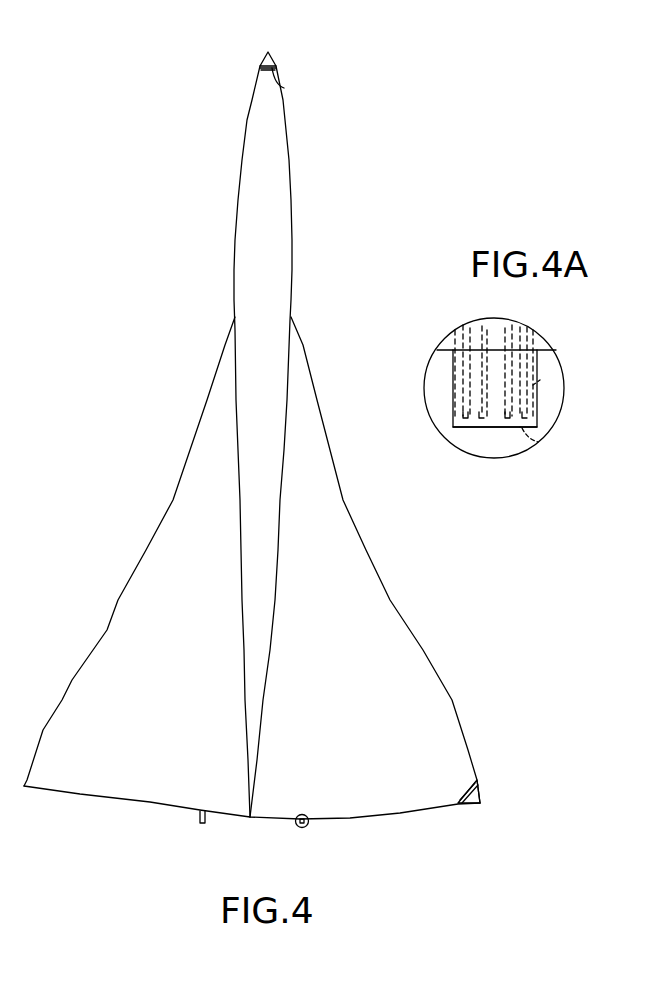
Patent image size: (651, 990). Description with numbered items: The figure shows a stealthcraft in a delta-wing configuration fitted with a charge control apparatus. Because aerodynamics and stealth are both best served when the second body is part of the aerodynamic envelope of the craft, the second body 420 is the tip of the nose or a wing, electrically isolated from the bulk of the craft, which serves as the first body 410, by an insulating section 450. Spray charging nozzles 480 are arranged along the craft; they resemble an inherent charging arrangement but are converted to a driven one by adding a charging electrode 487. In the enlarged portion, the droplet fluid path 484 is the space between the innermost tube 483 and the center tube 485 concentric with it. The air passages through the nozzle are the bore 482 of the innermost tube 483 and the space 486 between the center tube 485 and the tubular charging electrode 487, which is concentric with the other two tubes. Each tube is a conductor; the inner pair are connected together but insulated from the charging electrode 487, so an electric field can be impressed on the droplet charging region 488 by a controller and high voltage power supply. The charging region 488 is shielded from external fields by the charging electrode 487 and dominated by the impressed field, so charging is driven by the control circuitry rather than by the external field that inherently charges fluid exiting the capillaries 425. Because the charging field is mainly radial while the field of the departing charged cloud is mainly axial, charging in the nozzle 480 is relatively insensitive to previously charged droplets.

In FIG. 4, the first body 410 is at (292, 226).
In FIG. 4, the second body 420 is at (277, 62).
In FIG. 4, the capillaries 425 is at (268, 53).
In FIG. 4, the insulating section 450 is at (284, 88).
In FIG. 4, the spray charging nozzle 480 is at (205, 823).
In FIG. 4A, the spray charging nozzle 480 is at (542, 362).
In FIG. 4A, the bore 482 is at (490, 328).
In FIG. 4A, the innermost tube 483 is at (511, 418).
In FIG. 4A, the droplet fluid path 484 is at (522, 323).
In FIG. 4A, the center tube 485 is at (535, 440).
In FIG. 4A, the space 486 is at (535, 337).
In FIG. 4A, the charging electrode 487 is at (537, 395).
In FIG. 4A, the droplet charging region 488 is at (528, 425).